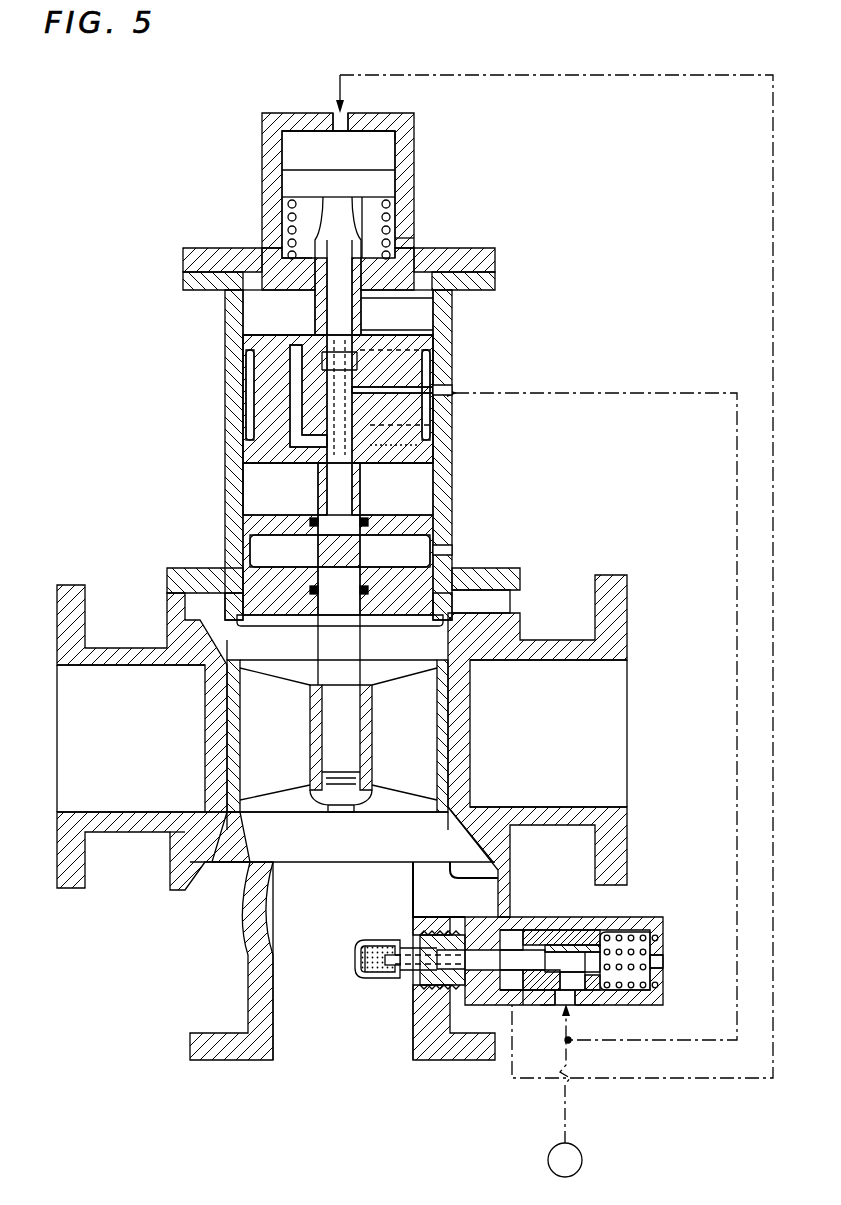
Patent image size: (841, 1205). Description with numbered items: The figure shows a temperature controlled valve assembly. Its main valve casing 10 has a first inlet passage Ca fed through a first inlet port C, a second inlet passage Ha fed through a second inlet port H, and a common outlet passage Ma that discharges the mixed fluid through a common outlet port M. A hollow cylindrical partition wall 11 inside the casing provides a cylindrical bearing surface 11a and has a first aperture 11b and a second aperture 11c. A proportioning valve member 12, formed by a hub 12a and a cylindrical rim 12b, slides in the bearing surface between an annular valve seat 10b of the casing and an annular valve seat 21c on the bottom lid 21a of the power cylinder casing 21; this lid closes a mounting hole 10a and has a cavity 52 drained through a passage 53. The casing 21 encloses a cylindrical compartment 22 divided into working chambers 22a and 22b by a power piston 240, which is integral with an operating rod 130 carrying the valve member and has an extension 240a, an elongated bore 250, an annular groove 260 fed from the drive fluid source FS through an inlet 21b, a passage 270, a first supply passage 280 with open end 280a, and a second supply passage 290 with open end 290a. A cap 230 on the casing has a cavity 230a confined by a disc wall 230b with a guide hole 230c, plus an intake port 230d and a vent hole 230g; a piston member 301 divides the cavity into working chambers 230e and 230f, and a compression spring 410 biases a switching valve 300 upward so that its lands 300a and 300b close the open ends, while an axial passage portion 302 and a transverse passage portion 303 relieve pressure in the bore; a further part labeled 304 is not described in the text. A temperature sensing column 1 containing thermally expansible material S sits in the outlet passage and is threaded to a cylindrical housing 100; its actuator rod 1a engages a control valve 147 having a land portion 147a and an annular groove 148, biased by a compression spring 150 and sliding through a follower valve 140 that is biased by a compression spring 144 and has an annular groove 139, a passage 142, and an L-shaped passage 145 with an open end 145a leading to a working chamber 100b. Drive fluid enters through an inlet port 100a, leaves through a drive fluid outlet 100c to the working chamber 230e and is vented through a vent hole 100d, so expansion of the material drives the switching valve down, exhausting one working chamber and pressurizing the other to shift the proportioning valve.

The temperature sensing column 1 is at (375, 980).
The actuator rod 1a is at (447, 975).
The main valve casing 10 is at (342, 746).
The mounting hole 10a is at (508, 587).
The annular valve seat 10b is at (302, 782).
The partition wall 11 is at (222, 720).
The cylindrical bearing surface 11a is at (225, 745).
The first aperture 11b is at (208, 660).
The second aperture 11c is at (470, 818).
The proportioning valve member 12 is at (262, 762).
The hub 12a is at (258, 865).
The cylindrical rim 12b is at (195, 828).
The power cylinder casing 21 is at (232, 505).
The bottom lid 21a is at (248, 585).
The inlet 21b is at (445, 385).
The annular valve seat 21c is at (208, 620).
The cylindrical compartment 22 is at (268, 535).
The working chamber 22a is at (250, 490).
The working chamber 22b is at (418, 300).
The cavity 52 is at (262, 548).
The passage 53 is at (452, 548).
The cylindrical housing 100 is at (628, 1005).
The inlet port 100a is at (548, 1005).
The working chamber 100b is at (512, 940).
The drive fluid outlet 100c is at (508, 1005).
The vent hole 100d is at (643, 985).
The operating rod 130 is at (362, 642).
The annular groove 139 is at (582, 922).
The follower valve 140 is at (530, 1005).
The passage 142 is at (568, 1050).
The compression spring 144 is at (612, 1005).
The passage 145 is at (590, 910).
The open end of passage 145a is at (603, 942).
The control valve 147 is at (482, 940).
The land portion 147a is at (622, 960).
The annular groove 148 is at (598, 898).
The compression spring 150 is at (648, 1005).
The cap 230 is at (268, 174).
The cavity 230a is at (300, 150).
The disc wall 230b is at (298, 258).
The guide hole 230c is at (405, 245).
The intake port 230d is at (333, 118).
The working chamber 230e is at (380, 140).
The working chamber 230f is at (370, 212).
The vent hole 230g is at (405, 226).
The power piston 240 is at (256, 426).
The extension 240a is at (243, 290).
The elongated bore 250 is at (400, 327).
The annular groove 260 is at (250, 362).
The passage 270 is at (440, 408).
The first supply passage 280 is at (425, 427).
The open end 280a is at (415, 347).
The second supply passage 290 is at (256, 392).
The open end 290a is at (256, 465).
The switching valve 300 is at (405, 315).
The land 300a is at (320, 357).
The land 300b is at (400, 473).
The piston member 301 is at (375, 175).
The axial passage portion 302 is at (425, 446).
The transverse passage portion 303 is at (340, 320).
The stem bore 304 is at (330, 405).
The compression spring 410 is at (290, 212).
The first inlet port C is at (55, 722).
The first inlet passage Ca is at (131, 738).
The second inlet port H is at (627, 683).
The second inlet passage Ha is at (548, 733).
The common outlet port M is at (344, 994).
The common outlet passage Ma is at (343, 961).
The thermally expansible material S is at (360, 945).
The drive fluid source FS is at (565, 1090).